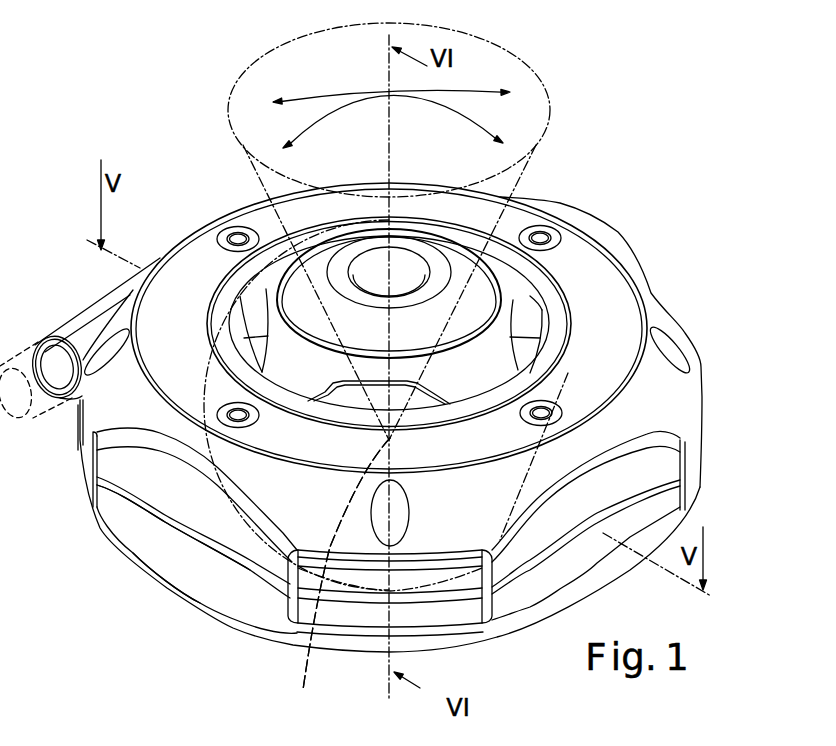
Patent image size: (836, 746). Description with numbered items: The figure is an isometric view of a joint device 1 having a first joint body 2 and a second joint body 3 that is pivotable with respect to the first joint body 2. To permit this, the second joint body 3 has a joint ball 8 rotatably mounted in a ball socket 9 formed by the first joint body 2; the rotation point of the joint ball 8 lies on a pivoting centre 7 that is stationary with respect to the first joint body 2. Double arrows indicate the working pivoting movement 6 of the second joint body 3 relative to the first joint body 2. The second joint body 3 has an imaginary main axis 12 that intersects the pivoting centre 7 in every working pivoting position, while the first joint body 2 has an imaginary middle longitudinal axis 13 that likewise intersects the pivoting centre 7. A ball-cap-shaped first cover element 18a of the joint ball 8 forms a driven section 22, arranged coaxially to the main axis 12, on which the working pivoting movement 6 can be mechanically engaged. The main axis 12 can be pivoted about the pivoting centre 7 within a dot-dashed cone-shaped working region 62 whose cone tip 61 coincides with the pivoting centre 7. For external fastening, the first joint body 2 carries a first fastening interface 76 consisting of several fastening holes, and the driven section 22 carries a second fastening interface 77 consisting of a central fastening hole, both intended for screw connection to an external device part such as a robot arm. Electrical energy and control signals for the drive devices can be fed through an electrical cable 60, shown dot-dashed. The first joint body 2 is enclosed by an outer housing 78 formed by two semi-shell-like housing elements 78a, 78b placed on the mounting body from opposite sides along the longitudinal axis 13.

The joint device 1 is at (701, 204).
The first joint body 2 is at (148, 557).
The second joint body 3 is at (520, 300).
The working pivoting movement 6 is at (482, 127).
The pivoting centre 7 is at (346, 564).
The joint ball 8 is at (254, 286).
The ball socket 9 is at (527, 327).
The main axis 12 is at (394, 162).
The middle longitudinal axis 13 is at (390, 650).
The first cover element 18a is at (458, 262).
The driven section 22 is at (389, 293).
The electrical cable 60 is at (52, 400).
The cone tip 61 is at (330, 582).
The cone-shaped working region 62 is at (537, 71).
The first fastening interface 76 is at (236, 238).
The second fastening interface 77 is at (371, 273).
The outer housing 78 is at (708, 477).
The housing element 78a is at (248, 547).
The housing element 78b is at (200, 588).